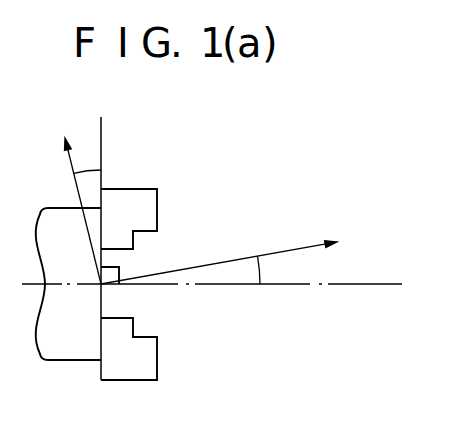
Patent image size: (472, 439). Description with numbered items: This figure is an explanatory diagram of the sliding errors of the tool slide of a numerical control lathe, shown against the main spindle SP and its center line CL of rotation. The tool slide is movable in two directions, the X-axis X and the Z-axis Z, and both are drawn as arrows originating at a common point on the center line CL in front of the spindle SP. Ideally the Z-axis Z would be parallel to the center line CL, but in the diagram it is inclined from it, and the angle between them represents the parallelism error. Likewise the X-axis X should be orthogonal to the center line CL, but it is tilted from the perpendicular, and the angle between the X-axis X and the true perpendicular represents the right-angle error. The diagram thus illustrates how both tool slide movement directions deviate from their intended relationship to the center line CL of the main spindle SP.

The main spindle SP is at (61, 352).
The center line CL is at (228, 285).
The X-axis X is at (78, 201).
The Z-axis Z is at (227, 257).